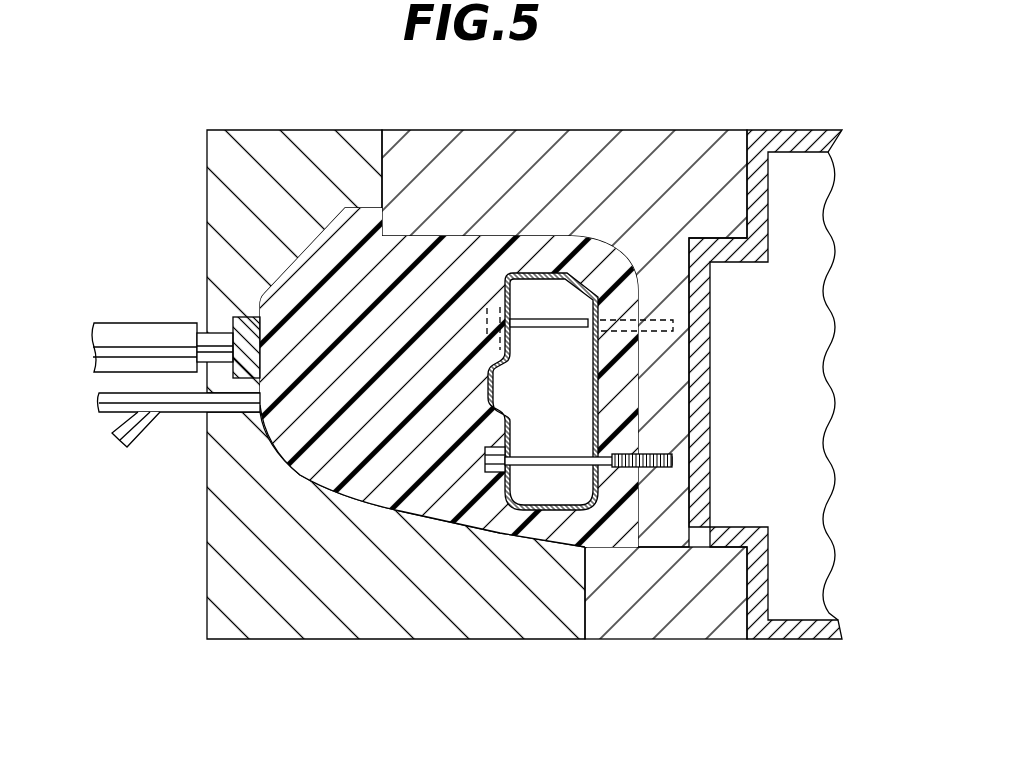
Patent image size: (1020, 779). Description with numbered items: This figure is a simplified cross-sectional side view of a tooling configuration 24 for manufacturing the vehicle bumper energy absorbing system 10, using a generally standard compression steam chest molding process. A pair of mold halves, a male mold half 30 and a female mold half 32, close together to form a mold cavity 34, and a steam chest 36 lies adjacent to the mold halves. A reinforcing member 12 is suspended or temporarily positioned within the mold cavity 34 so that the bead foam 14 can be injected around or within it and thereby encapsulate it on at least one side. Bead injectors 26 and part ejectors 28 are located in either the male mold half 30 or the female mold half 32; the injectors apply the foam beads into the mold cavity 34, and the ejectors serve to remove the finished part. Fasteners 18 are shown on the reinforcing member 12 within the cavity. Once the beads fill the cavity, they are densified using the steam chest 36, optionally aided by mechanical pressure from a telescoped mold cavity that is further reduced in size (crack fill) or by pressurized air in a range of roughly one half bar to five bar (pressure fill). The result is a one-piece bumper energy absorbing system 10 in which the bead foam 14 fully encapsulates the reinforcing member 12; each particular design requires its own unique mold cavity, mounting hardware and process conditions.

The vehicle bumper energy absorbing system 10 is at (522, 541).
The reinforcing member 12 is at (583, 490).
The bead foam 14 is at (404, 380).
The fastener bolts 18 is at (572, 328).
The tooling configuration 24 is at (737, 115).
The bead injectors 26 is at (143, 430).
The part ejectors 28 is at (148, 328).
The male mold half 30 is at (696, 626).
The female mold half 32 is at (328, 138).
The mold cavity 34 is at (357, 497).
The steam chest 36 is at (810, 432).